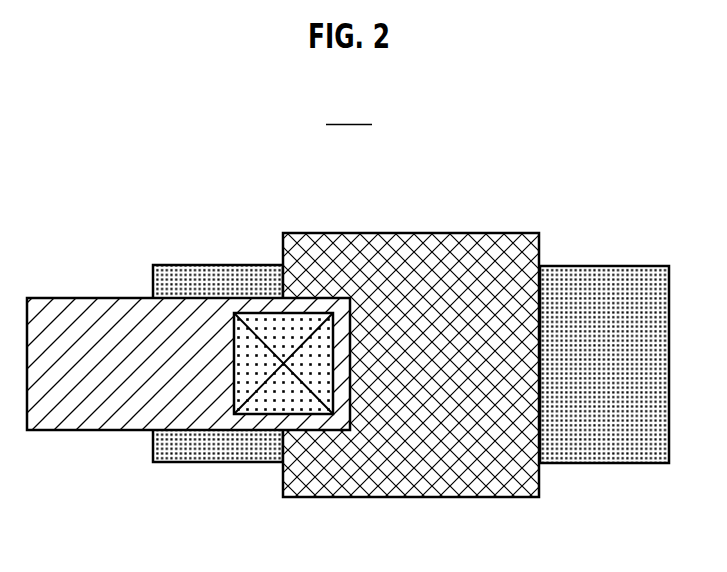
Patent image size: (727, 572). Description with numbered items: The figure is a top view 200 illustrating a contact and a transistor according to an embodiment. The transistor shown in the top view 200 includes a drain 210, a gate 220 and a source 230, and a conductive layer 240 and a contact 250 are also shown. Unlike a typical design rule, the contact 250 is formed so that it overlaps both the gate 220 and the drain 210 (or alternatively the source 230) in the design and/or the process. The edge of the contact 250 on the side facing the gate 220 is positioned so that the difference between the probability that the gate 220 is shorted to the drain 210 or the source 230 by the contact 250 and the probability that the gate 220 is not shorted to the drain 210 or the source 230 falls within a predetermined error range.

The top view 200 is at (349, 111).
The drain 210 is at (217, 265).
The gate 220 is at (410, 233).
The source 230 is at (602, 266).
The conductive layer 240 is at (90, 430).
The contact 250 is at (253, 415).